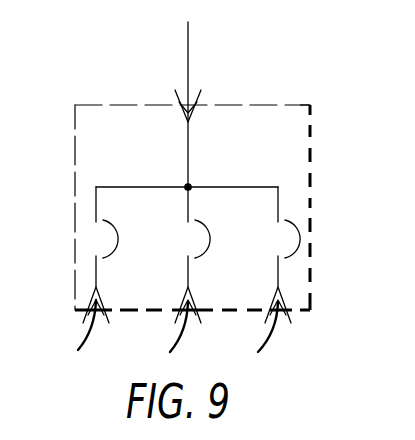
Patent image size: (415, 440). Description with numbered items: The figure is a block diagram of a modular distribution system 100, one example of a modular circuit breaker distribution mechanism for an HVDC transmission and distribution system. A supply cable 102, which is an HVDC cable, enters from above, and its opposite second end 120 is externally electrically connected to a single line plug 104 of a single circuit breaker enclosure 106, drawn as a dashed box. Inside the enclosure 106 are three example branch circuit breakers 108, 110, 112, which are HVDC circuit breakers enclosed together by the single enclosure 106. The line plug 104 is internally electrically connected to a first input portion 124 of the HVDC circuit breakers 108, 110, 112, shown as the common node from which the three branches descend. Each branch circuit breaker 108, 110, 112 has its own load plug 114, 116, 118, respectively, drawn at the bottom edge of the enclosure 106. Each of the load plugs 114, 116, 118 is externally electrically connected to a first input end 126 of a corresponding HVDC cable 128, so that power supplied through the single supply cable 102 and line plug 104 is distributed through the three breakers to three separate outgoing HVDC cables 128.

The modular distribution system 100 is at (96, 78).
The supply cable 102 is at (187, 41).
The line plug 104 is at (197, 111).
The single circuit breaker enclosure 106 is at (312, 130).
The branch circuit breaker 108 is at (120, 232).
The branch circuit breaker 110 is at (212, 232).
The branch circuit breaker 112 is at (301, 234).
The load plug 114 is at (103, 294).
The load plug 116 is at (196, 292).
The load plug 118 is at (289, 296).
The second end 120 is at (199, 89).
The first input portion 124 is at (190, 184).
The first input end 126 is at (105, 318).
The HVDC cable 128 is at (78, 350).